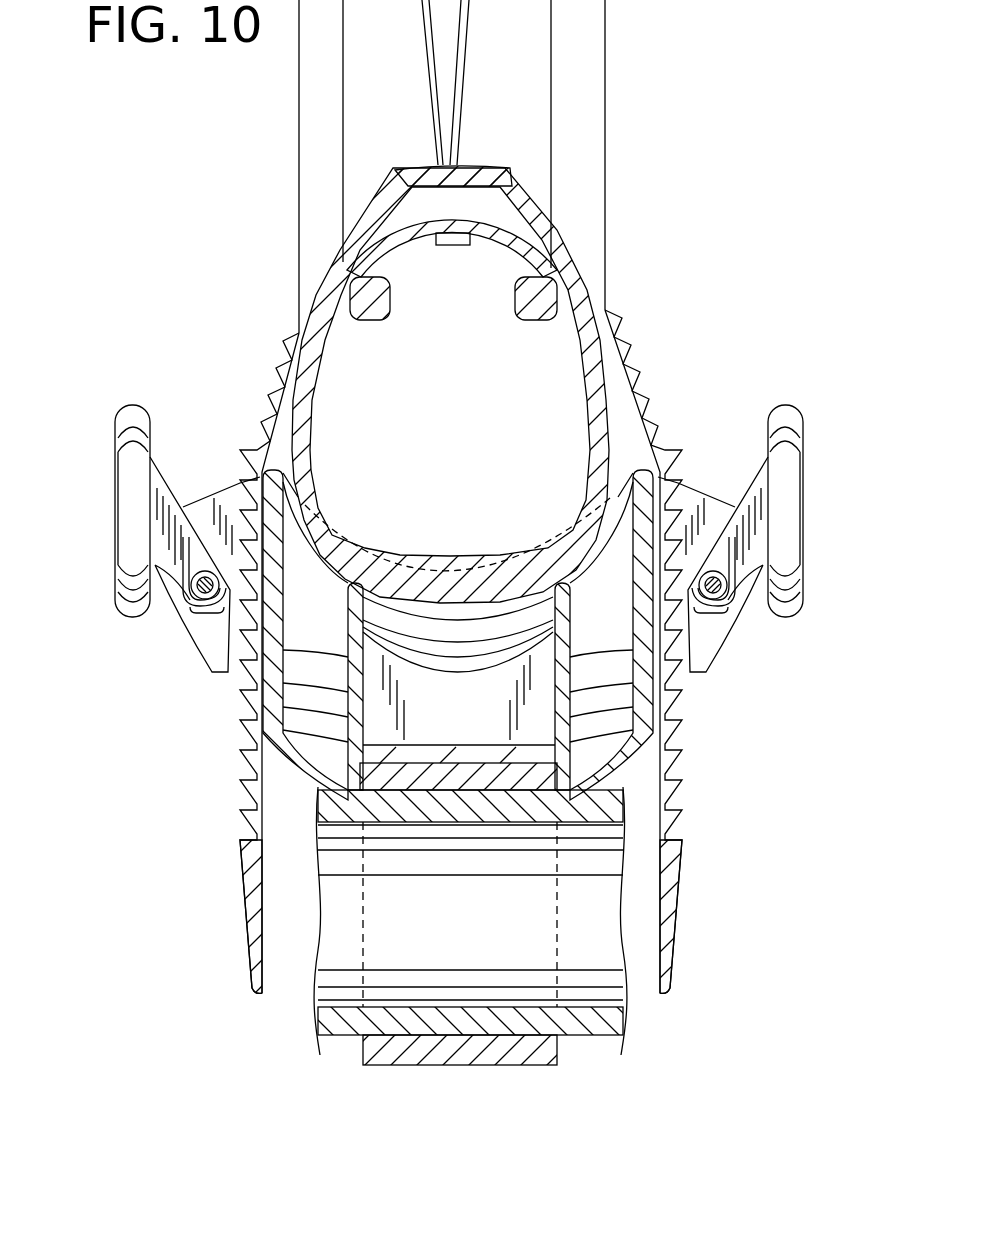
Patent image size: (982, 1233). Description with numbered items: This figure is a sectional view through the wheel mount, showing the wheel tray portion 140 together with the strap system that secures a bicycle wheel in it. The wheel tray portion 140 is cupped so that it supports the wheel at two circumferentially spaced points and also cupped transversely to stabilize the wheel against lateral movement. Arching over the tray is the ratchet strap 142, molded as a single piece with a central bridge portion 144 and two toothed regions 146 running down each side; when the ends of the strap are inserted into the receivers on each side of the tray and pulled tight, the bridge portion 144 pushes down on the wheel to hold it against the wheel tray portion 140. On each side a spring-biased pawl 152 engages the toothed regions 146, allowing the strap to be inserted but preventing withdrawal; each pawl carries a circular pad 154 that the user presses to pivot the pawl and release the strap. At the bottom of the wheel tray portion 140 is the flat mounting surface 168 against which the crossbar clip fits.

The wheel tray portion 140 is at (638, 410).
The ratchet strap 142 is at (582, 255).
The central bridge portion 144 is at (488, 168).
The toothed regions 146 is at (240, 765).
The spring-biased pawl 152 is at (175, 487).
The circular pad 154 is at (117, 493).
The flat mounting surface 168 is at (437, 782).